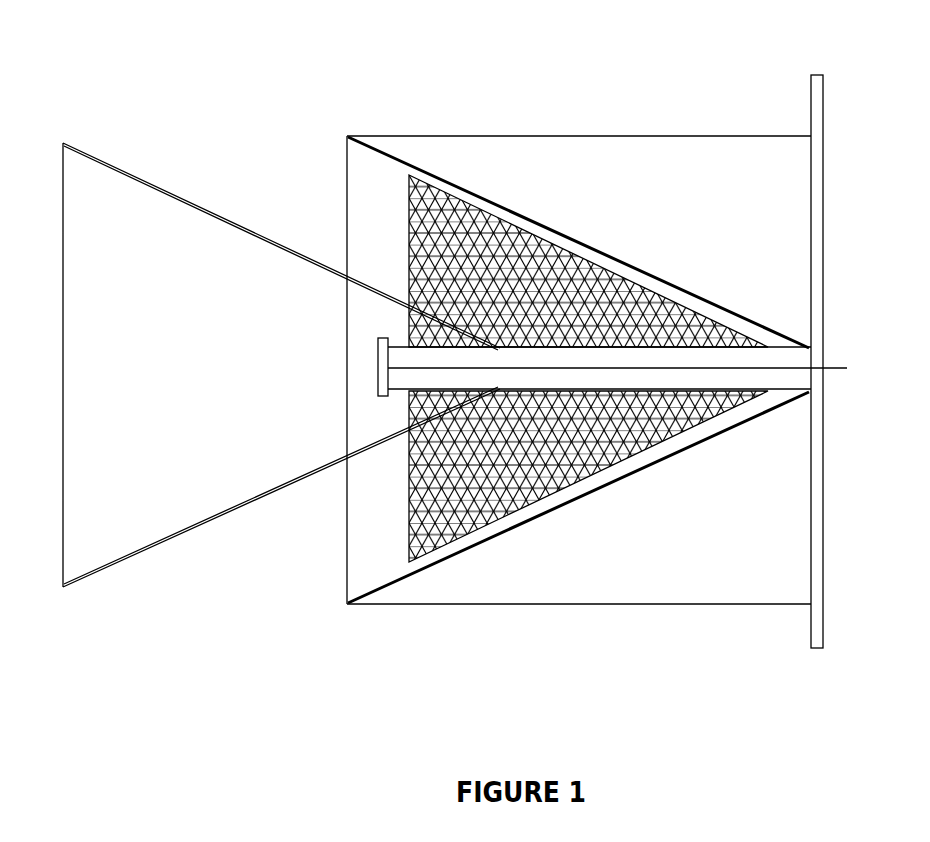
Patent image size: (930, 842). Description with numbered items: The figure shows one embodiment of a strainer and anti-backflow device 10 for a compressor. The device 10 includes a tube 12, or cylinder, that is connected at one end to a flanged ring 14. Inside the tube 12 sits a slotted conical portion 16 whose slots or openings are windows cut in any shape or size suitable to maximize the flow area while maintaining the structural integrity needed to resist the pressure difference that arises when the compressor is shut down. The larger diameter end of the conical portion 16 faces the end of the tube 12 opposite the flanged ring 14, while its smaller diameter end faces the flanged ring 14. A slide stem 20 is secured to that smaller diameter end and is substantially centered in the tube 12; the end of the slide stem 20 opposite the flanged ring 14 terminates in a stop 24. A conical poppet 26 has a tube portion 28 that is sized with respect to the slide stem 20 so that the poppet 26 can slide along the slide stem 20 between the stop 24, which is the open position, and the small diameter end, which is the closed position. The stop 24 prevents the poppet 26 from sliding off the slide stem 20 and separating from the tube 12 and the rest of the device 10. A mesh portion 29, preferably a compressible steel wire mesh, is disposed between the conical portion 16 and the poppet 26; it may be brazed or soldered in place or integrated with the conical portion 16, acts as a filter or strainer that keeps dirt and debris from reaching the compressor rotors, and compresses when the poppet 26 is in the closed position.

The strainer and anti-backflow device 10 is at (271, 108).
The tube 12 is at (527, 136).
The flanged ring 14 is at (820, 97).
The slotted conical portion 16 is at (560, 237).
The slide stem 20 is at (712, 382).
The stop 24 is at (381, 347).
The conical poppet 26 is at (253, 502).
The tube portion 28 is at (427, 345).
The mesh portion 29 is at (631, 297).